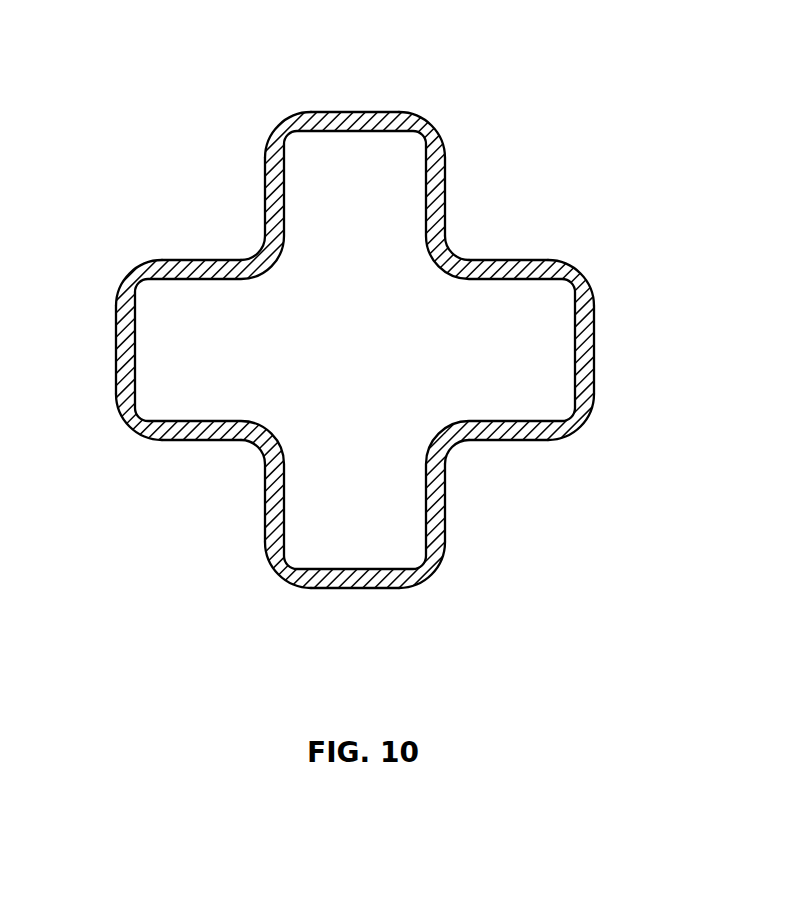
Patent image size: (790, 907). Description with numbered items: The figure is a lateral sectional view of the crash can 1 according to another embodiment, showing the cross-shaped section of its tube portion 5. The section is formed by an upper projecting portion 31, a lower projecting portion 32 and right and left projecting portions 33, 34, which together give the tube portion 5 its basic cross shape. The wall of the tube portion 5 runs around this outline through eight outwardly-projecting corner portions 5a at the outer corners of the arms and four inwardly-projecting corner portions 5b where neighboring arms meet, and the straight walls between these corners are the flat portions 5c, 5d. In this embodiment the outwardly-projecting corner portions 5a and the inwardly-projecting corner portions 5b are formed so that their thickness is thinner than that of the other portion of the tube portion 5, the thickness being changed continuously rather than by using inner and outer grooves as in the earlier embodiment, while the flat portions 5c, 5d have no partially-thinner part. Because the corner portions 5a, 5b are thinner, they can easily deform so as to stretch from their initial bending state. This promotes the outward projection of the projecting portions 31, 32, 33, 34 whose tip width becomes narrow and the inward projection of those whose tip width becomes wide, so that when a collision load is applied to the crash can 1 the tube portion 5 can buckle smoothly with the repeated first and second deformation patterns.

The crash can 1 is at (548, 91).
The tube portion 5 is at (606, 349).
The outwardly-projecting corner portion 5a is at (280, 125).
The inwardly-projecting corner portion 5b is at (265, 265).
The flat portion 5c is at (355, 110).
The flat portion 5d is at (265, 190).
The upper projecting portion 31 is at (447, 160).
The lower projecting portion 32 is at (265, 538).
The left projecting portion 33 is at (173, 260).
The right projecting portion 34 is at (537, 258).